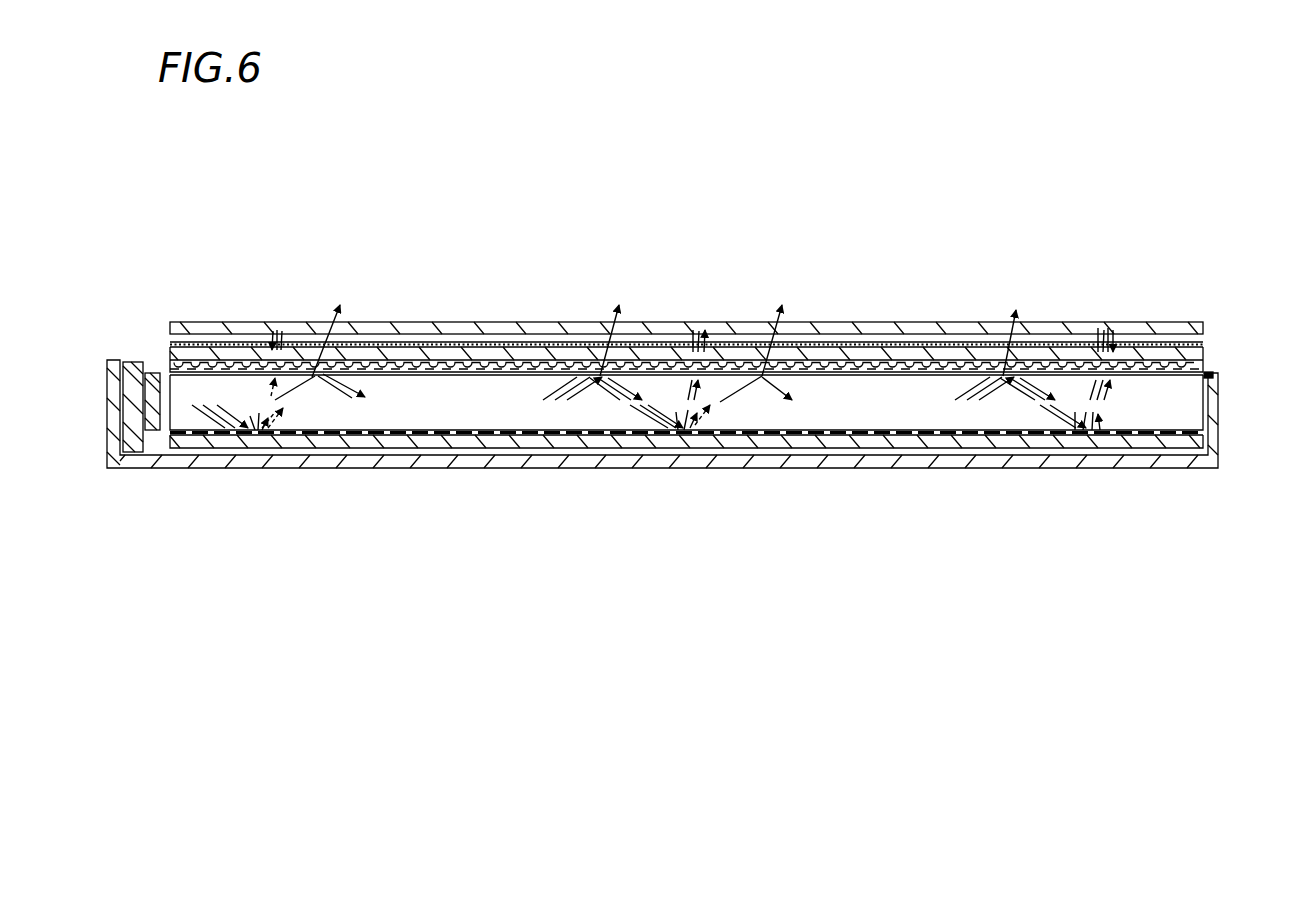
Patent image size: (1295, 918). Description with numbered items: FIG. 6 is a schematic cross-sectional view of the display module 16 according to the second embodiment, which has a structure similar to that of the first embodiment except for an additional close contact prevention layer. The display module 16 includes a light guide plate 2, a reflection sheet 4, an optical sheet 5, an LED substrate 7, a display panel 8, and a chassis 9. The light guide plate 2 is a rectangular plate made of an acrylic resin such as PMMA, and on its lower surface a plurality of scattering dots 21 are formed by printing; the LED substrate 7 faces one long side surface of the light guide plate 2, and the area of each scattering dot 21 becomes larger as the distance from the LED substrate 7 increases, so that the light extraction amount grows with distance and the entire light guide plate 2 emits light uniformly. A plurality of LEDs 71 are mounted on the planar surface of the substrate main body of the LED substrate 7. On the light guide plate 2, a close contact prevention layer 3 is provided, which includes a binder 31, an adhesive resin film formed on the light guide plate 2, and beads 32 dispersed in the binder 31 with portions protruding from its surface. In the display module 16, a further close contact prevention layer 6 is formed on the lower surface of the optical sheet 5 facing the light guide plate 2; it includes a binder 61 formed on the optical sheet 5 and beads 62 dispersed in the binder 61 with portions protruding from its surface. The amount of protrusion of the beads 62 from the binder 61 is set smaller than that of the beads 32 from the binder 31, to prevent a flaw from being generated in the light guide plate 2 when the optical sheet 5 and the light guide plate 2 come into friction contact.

The display module 16 is at (1133, 113).
The light guide plate 2 is at (1192, 415).
The scattering dot 21 is at (963, 436).
The close contact prevention layer 3 is at (1212, 376).
The binder 31 is at (1171, 368).
The beads 32 is at (1182, 374).
The reflection sheet 4 is at (1152, 448).
The optical sheet 5 is at (975, 362).
The close contact prevention layer 6 is at (1210, 365).
The binder 61 is at (845, 361).
The beads 62 is at (858, 371).
The LED substrate 7 is at (128, 357).
The LED 71 is at (149, 372).
The display panel 8 is at (913, 333).
The chassis 9 is at (1078, 466).